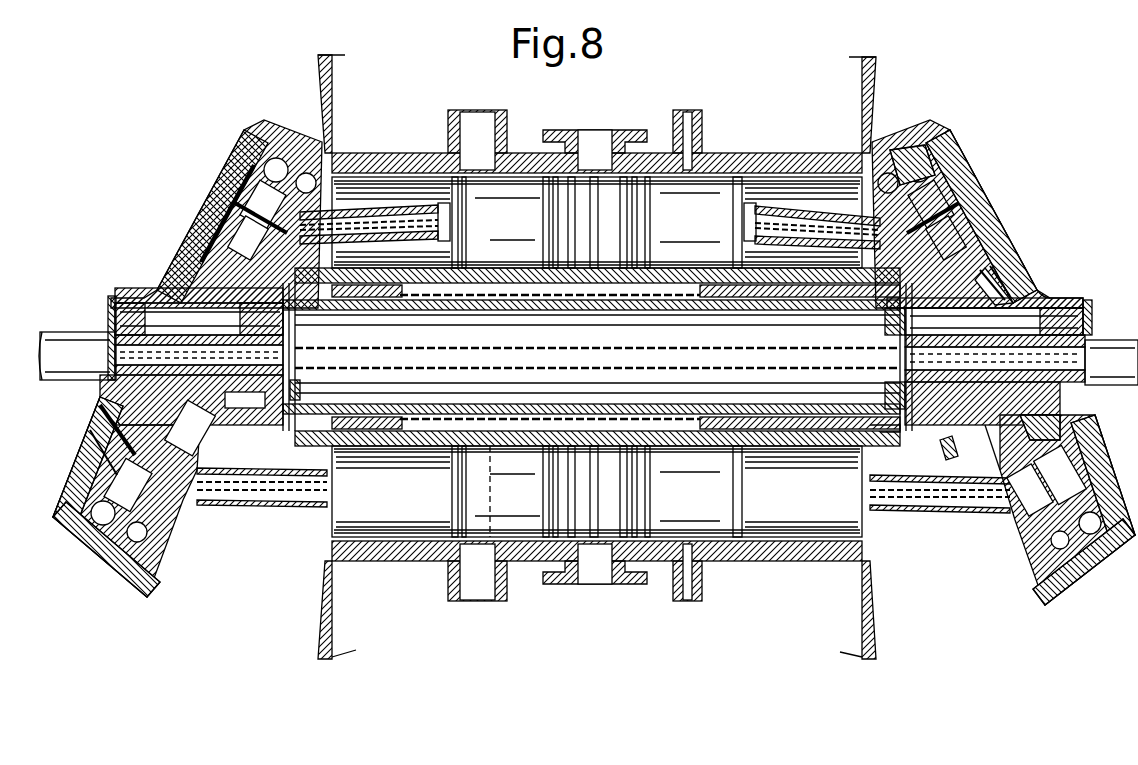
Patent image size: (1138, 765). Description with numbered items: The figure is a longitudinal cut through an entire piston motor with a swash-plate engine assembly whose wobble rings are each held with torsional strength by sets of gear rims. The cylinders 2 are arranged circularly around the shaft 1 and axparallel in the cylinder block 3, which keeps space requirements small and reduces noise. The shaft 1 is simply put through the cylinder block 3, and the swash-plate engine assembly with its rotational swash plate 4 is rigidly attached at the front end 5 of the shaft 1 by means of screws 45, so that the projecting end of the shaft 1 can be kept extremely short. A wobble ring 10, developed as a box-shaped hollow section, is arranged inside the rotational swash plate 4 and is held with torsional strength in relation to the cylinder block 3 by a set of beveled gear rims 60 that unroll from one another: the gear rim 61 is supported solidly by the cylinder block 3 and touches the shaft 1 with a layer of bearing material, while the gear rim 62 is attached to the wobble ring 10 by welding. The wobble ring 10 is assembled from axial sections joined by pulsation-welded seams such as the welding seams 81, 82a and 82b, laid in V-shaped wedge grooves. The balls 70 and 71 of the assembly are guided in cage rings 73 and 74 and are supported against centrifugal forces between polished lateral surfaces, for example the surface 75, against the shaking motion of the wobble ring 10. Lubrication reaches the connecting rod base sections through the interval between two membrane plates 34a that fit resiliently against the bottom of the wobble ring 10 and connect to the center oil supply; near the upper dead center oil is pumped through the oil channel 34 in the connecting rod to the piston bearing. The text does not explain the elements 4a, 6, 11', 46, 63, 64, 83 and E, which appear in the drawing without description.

The shaft 1 is at (836, 326).
The cylinders 2 is at (972, 358).
The cylinder block 3 is at (872, 566).
The rotational swash plate 4 is at (1102, 426).
The end plate 4a is at (1068, 298).
The front end of shaft 5 is at (1040, 291).
The pin 6 is at (302, 389).
The wobble ring 10 is at (1022, 546).
The piston rod 11' is at (607, 369).
The oil channel 34 is at (975, 204).
The membrane plates 34a is at (988, 226).
The screws 45 is at (1090, 318).
The bearing 46 is at (886, 395).
The set of beveled gear rims 60 is at (1000, 258).
The beveled gear rim 61 is at (946, 455).
The beveled gear rim 62 is at (1032, 432).
The passage 63 is at (893, 433).
The bearing 64 is at (883, 318).
The ball 70 is at (1072, 588).
The ball 71 is at (925, 140).
The cage ring 73 is at (858, 143).
The cage ring 74 is at (908, 137).
The polished lateral surface 75 is at (1093, 574).
The welding seam 81 is at (186, 240).
The welding seam 82a is at (101, 441).
The welding seam 82b is at (82, 472).
The cylinder block 83 is at (181, 526).
The chamber E is at (986, 430).